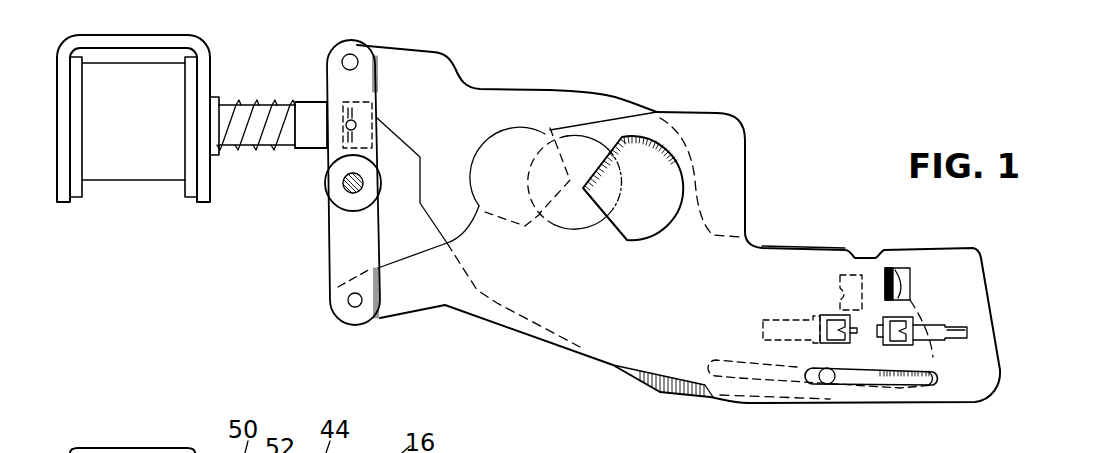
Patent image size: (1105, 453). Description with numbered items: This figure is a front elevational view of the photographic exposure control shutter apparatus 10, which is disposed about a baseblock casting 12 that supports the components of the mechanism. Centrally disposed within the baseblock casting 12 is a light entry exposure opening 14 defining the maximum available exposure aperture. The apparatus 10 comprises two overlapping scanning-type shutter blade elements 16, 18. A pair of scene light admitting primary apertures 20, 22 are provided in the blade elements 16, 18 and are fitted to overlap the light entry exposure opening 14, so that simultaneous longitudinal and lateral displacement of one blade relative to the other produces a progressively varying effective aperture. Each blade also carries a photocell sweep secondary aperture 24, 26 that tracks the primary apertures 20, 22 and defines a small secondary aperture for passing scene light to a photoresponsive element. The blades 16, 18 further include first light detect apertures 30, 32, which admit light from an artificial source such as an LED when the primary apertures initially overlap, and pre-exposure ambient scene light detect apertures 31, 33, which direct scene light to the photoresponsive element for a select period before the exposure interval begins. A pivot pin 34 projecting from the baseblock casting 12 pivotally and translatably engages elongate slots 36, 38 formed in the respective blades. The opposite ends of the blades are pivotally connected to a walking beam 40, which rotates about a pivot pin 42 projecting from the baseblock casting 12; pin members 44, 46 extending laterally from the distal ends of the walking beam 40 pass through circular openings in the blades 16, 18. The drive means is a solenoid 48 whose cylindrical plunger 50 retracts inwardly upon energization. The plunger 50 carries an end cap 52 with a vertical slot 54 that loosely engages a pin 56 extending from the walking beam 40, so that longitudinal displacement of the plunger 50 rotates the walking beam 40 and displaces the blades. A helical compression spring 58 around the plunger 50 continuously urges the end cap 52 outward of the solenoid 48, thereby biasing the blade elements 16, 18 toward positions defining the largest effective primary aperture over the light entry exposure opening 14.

The photographic exposure control shutter apparatus 10 is at (842, 82).
The baseblock casting 12 is at (837, 180).
The light entry exposure opening 14 is at (568, 230).
The shutter blade element 16 is at (483, 90).
The shutter blade element 18 is at (415, 318).
The scene light admitting primary aperture 20 is at (483, 140).
The scene light admitting primary aperture 22 is at (643, 228).
The photocell sweep secondary aperture 24 is at (763, 323).
The photocell sweep secondary aperture 26 is at (967, 330).
The first light detect aperture 30 is at (840, 282).
The pre-exposure ambient scene light detect aperture 31 is at (890, 345).
The first light detect aperture 32 is at (910, 278).
The pre-exposure ambient scene light detect aperture 33 is at (830, 340).
The pivot pin 34 is at (830, 380).
The elongate slot 36 is at (732, 375).
The elongate slot 38 is at (925, 375).
The walking beam 40 is at (325, 265).
The pivot pin 42 is at (345, 189).
The pin member 44 is at (356, 57).
The pin member 46 is at (352, 307).
The solenoid 48 is at (125, 213).
The solenoid plunger 50 is at (230, 105).
The end cap 52 is at (310, 149).
The vertical slot 54 is at (345, 101).
The pin 56 is at (355, 128).
The helical compression spring 58 is at (252, 147).